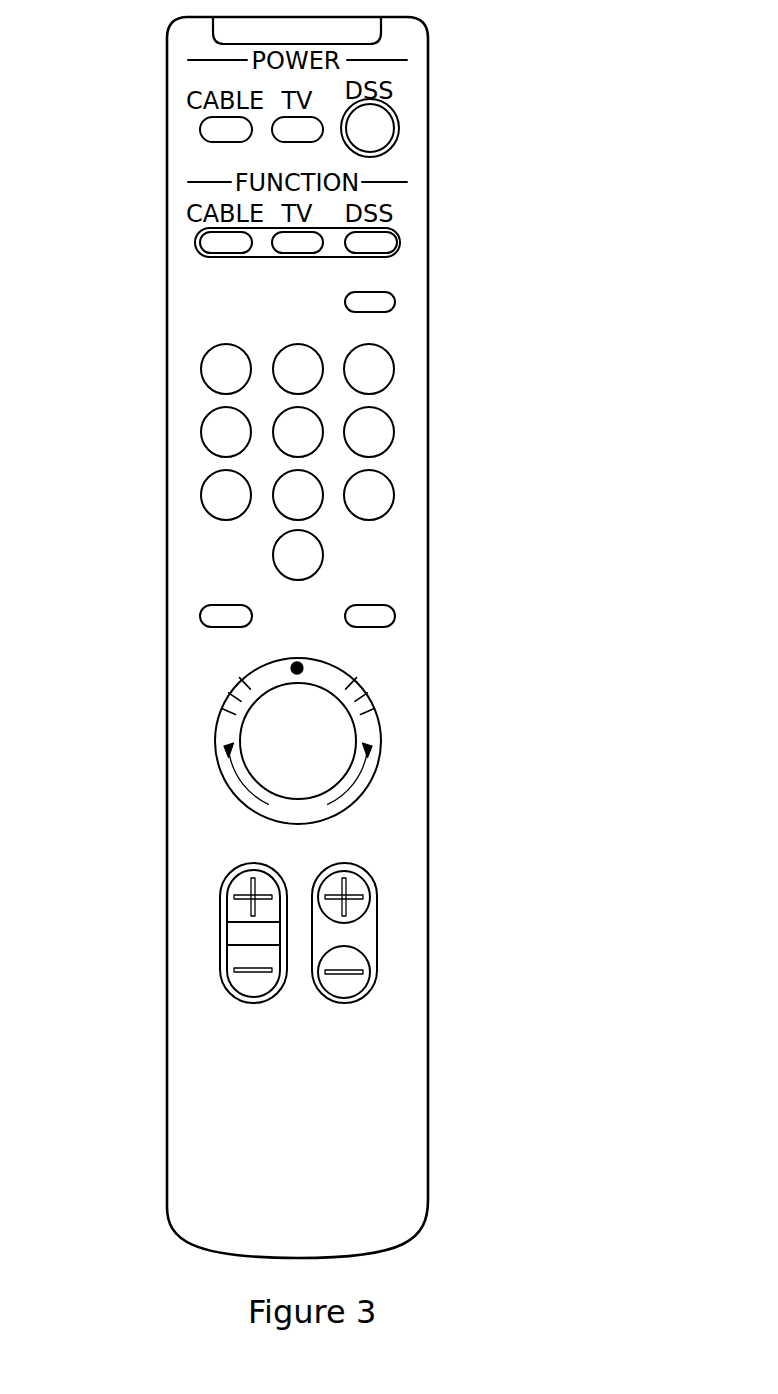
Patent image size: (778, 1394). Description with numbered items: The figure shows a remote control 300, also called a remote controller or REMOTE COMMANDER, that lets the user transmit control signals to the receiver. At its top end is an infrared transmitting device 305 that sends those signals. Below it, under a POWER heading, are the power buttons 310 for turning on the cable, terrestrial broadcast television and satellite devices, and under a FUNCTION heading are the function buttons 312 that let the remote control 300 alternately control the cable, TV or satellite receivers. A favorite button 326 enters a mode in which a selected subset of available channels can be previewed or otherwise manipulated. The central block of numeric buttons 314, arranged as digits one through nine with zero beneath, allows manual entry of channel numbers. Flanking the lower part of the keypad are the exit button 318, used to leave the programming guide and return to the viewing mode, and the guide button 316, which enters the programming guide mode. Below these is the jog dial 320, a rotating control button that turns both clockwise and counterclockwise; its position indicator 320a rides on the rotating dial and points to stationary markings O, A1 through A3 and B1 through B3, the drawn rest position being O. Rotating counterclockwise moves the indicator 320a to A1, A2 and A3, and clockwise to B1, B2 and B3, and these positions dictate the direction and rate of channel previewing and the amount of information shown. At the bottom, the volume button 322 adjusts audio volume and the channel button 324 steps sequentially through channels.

The remote control 300 is at (627, 1108).
The infrared transmitting device 305 is at (358, 27).
The power buttons 310 is at (413, 120).
The function buttons 312 is at (407, 240).
The numeric buttons 314 is at (413, 573).
The guide button 316 is at (395, 617).
The exit button 318 is at (200, 617).
The jog dial 320 is at (372, 765).
The position indicator 320a is at (291, 668).
The volume button 322 is at (233, 932).
The channel button 324 is at (372, 930).
The favorite button 326 is at (395, 303).